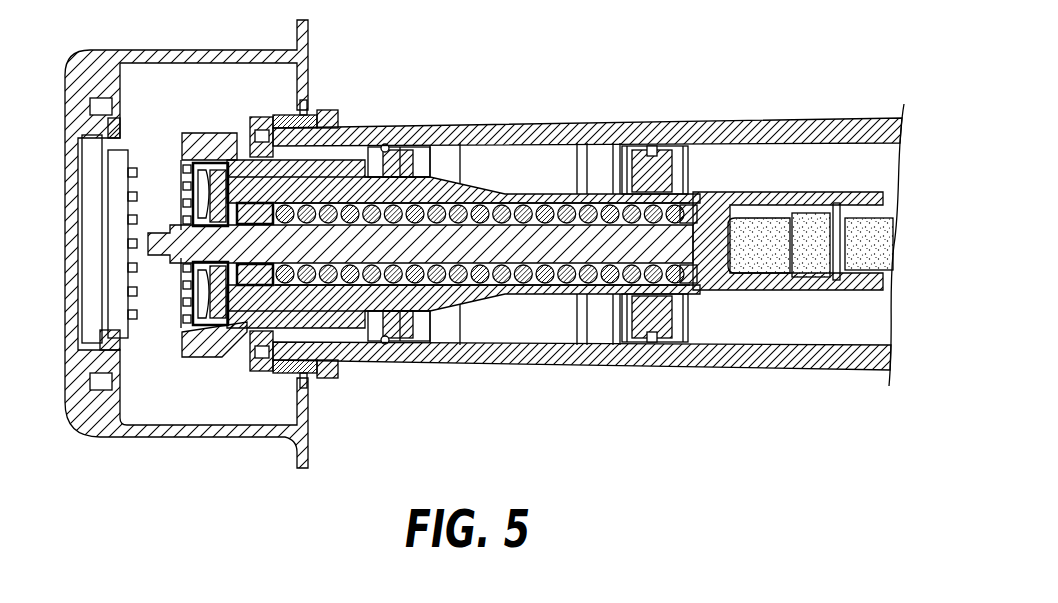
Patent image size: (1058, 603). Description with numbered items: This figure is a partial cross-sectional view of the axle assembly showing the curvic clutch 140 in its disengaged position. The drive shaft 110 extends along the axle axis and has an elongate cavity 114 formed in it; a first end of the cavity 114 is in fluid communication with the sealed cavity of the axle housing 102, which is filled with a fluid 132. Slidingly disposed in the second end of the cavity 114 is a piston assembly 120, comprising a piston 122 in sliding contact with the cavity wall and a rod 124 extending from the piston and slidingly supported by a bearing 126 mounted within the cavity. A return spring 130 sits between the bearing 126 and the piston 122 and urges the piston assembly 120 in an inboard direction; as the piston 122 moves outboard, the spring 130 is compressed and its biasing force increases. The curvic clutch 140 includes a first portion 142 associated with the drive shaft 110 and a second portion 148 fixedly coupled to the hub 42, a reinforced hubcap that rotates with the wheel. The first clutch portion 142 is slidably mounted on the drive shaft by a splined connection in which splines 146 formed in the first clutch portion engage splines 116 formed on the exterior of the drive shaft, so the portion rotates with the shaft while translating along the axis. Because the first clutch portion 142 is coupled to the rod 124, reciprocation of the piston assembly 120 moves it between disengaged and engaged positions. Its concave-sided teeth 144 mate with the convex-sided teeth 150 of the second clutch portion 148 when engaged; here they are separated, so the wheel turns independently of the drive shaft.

The hub 42 is at (78, 53).
The axle housing 102 is at (735, 127).
The drive shaft 110 is at (590, 195).
The cavity 114 is at (868, 257).
The splines 116 is at (387, 153).
The piston assembly 120 is at (525, 262).
The piston 122 is at (772, 282).
The rod 124 is at (488, 237).
The bearing 126 is at (243, 332).
The return spring 130 is at (523, 206).
The fluid 132 is at (773, 223).
The curvic clutch 140 is at (160, 341).
The first clutch portion 142 is at (210, 152).
The teeth 144 is at (173, 185).
The splines 146 is at (300, 188).
The second clutch portion 148 is at (117, 250).
The teeth 150 is at (140, 167).